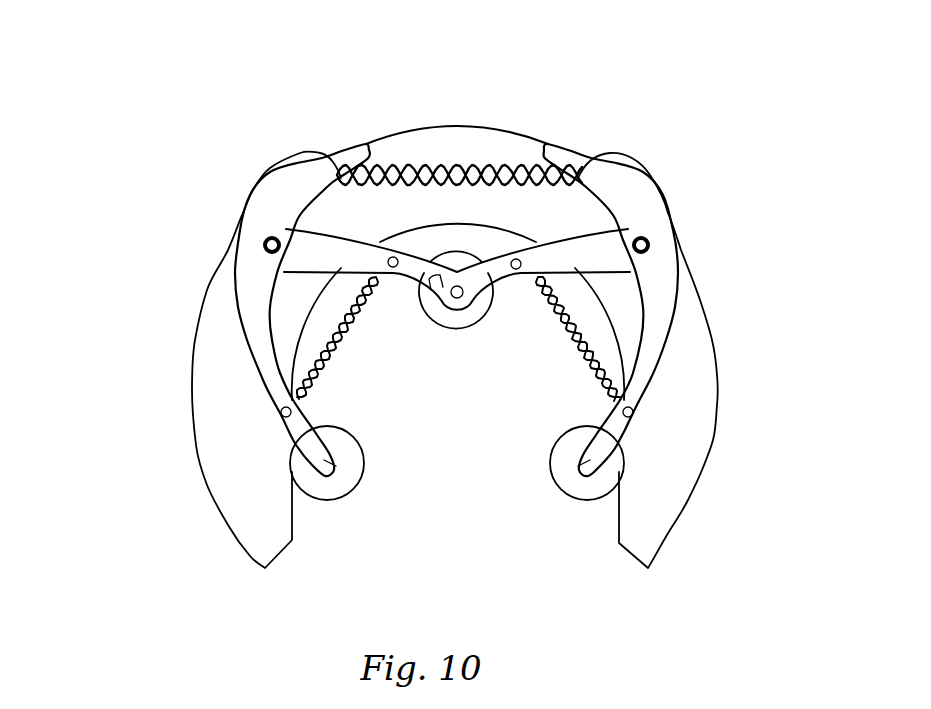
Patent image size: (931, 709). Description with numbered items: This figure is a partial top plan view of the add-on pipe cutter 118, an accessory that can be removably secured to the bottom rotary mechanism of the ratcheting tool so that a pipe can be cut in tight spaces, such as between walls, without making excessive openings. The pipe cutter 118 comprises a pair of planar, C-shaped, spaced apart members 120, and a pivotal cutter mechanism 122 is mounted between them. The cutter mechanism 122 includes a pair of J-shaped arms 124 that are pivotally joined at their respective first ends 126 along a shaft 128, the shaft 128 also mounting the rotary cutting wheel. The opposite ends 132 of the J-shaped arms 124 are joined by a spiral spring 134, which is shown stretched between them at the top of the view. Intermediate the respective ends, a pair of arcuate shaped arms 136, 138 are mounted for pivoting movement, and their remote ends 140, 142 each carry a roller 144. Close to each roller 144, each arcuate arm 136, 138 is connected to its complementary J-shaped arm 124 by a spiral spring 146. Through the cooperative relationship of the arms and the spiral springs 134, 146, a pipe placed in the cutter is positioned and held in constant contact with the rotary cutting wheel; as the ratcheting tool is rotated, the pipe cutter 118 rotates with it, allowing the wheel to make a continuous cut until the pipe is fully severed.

The pipe cutter 118 is at (401, 120).
The C-shaped members 120 is at (205, 481).
The cutter mechanism 122 is at (445, 327).
The J-shaped arms 124 is at (350, 233).
The first ends 126 is at (428, 292).
The shaft 128 is at (459, 286).
The opposite ends 132 is at (272, 155).
The spiral spring 134 is at (456, 165).
The arcuate shaped arm 136 is at (240, 284).
The arcuate shaped arm 138 is at (668, 348).
The remote end 140 is at (335, 445).
The remote end 142 is at (550, 468).
The roller 144 is at (327, 500).
The spiral spring 146 is at (340, 350).